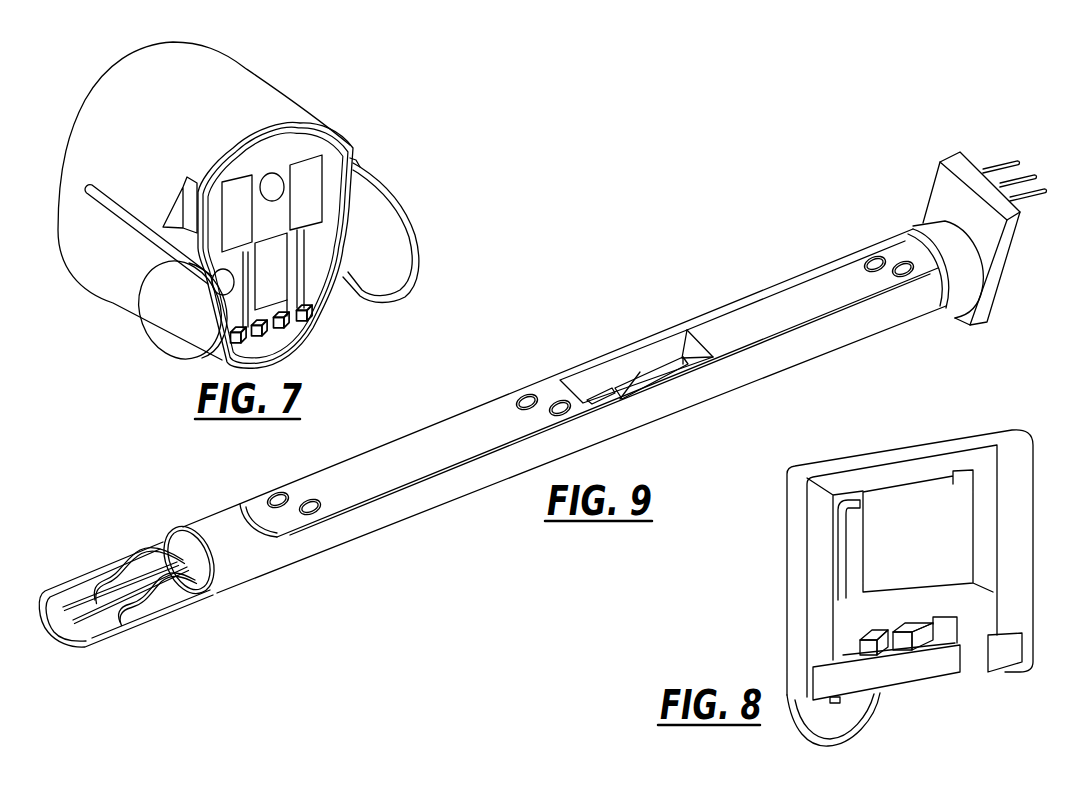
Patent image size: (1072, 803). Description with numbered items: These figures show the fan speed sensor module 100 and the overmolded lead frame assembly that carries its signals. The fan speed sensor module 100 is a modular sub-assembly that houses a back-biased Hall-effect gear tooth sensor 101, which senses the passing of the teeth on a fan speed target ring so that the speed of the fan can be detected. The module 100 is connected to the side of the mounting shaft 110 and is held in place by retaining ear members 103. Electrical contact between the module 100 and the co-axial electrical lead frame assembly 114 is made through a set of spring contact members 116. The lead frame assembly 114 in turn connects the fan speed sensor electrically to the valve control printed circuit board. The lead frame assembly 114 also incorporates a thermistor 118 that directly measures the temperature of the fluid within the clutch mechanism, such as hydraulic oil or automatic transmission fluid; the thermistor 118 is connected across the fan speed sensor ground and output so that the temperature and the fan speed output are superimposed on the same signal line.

In FIG. 7, the fan speed sensor module 100 is at (270, 97).
In FIG. 8, the fan speed sensor module 100 is at (785, 617).
In FIG. 8, the back-biased Hall-effect gear tooth sensor 101 is at (932, 505).
In FIG. 7, the retaining ear members 103 is at (417, 240).
In FIG. 8, the retaining ear members 103 is at (858, 705).
In FIG. 9, the mounting shaft 110 is at (250, 568).
In FIG. 9, the co-axial electrical lead frame assembly 114 is at (450, 425).
In FIG. 9, the spring contact members 116 is at (137, 552).
In FIG. 9, the thermistor 118 is at (627, 383).